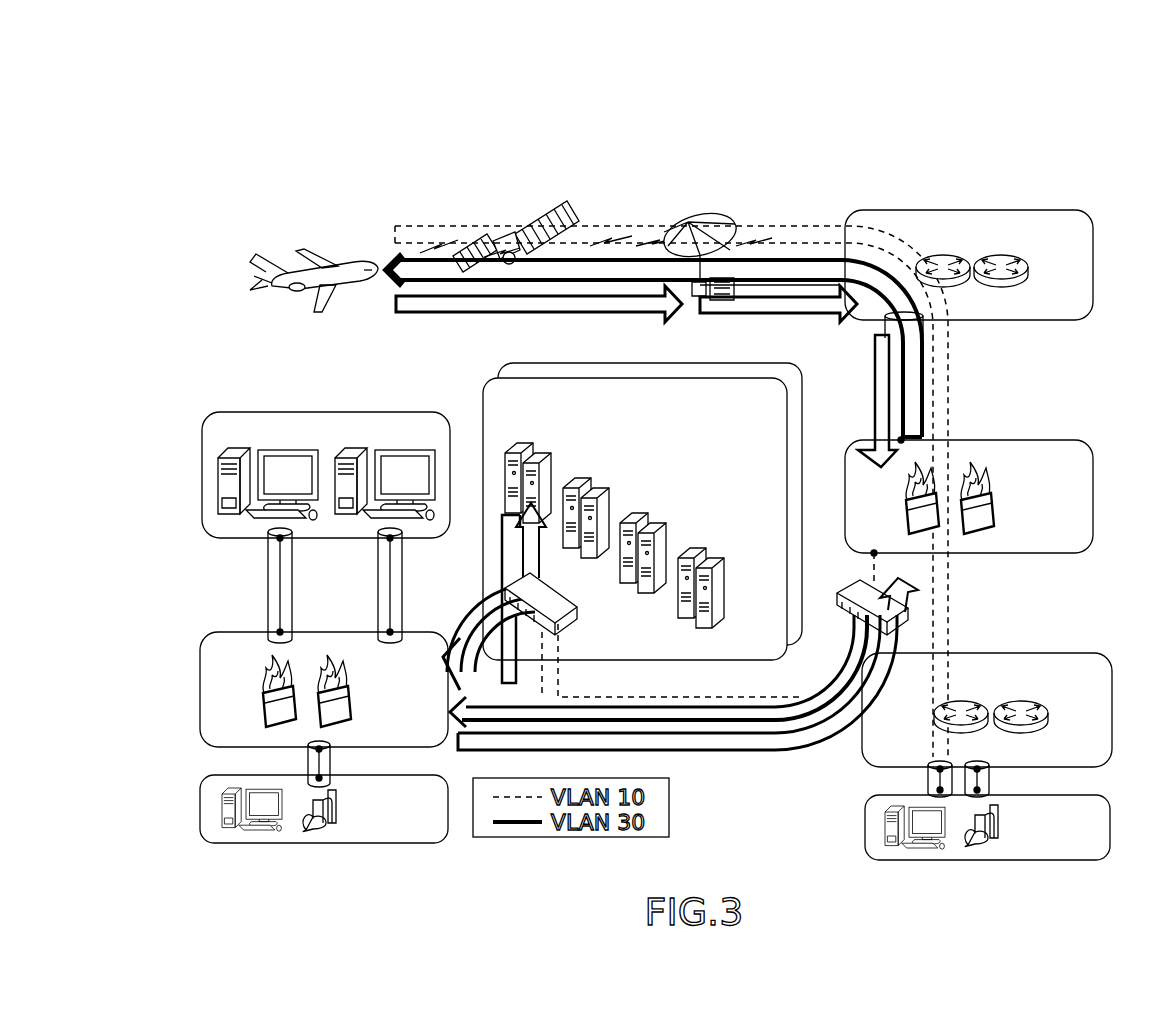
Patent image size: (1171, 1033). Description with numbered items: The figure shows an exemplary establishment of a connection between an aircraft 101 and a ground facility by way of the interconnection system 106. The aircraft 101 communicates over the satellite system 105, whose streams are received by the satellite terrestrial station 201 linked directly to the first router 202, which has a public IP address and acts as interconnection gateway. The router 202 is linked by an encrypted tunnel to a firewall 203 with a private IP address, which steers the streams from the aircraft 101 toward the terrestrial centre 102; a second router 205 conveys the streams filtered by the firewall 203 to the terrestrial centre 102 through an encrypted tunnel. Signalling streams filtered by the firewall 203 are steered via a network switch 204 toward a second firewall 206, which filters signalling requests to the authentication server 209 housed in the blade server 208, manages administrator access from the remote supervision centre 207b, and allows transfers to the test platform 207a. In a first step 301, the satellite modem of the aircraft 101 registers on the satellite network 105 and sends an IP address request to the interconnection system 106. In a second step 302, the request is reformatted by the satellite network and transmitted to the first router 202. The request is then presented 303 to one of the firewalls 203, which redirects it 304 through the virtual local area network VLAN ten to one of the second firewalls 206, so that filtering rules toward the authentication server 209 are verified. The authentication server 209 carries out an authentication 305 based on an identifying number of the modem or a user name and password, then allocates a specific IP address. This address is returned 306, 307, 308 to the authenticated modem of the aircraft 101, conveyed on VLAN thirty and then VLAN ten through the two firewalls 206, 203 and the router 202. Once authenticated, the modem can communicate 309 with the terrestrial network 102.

The aircraft 101 is at (338, 257).
The satellite system 105 is at (532, 207).
The satellite terrestrial station 201 is at (737, 220).
The communication with the terrestrial network 309 is at (773, 236).
The first router 202 is at (968, 208).
The interconnection system 106 is at (1087, 170).
The remote supervision centre 207b is at (342, 413).
The first step 301 is at (512, 302).
The second step 302 is at (728, 305).
The blade server 208 is at (753, 364).
The return of the allocated IP address 308 is at (937, 352).
The firewall 203 is at (1065, 438).
The presentation of the request 303 is at (882, 380).
The authentication server 209 is at (552, 445).
The return of the allocated IP address 306 is at (512, 550).
The authentication 305 is at (547, 557).
The second firewall 206 is at (198, 677).
The network switch 204 is at (908, 615).
The second router 205 is at (1087, 647).
The test platform 207a is at (200, 805).
The redirection through VLAN 10 304 is at (693, 718).
The return of the allocated IP address 307 is at (780, 742).
The terrestrial centre 102 is at (1112, 827).